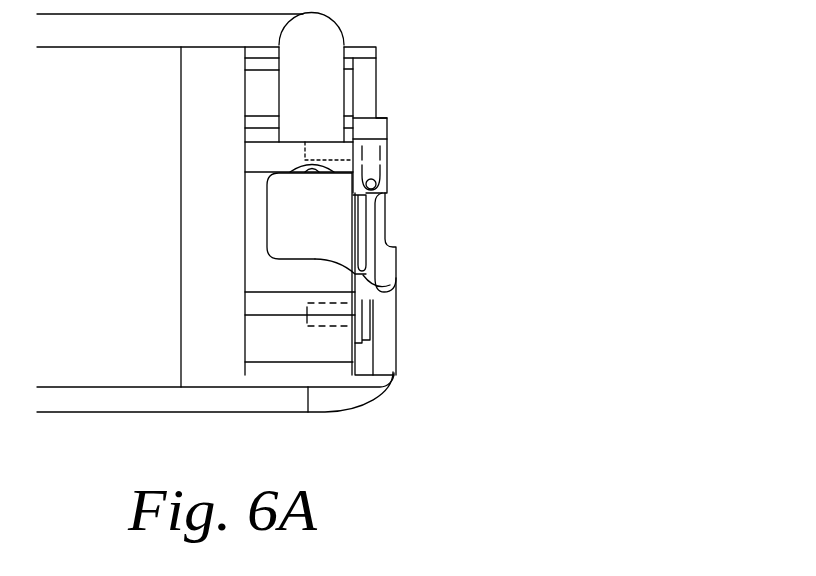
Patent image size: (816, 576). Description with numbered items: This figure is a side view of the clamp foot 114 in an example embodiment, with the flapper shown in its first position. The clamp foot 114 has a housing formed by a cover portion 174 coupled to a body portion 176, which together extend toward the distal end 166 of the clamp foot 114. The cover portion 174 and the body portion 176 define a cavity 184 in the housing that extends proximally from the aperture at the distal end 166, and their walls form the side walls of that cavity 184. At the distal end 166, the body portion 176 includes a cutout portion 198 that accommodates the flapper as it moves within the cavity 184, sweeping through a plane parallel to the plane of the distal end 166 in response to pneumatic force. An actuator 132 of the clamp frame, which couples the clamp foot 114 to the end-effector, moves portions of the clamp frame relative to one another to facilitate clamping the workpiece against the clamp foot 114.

The clamp foot 114 is at (448, 48).
The distal end 166 is at (398, 150).
The actuator 132 is at (361, 224).
The cover portion 174 is at (396, 262).
The cavity 184 is at (327, 225).
The cutout portion 198 is at (342, 268).
The body portion 176 is at (352, 401).